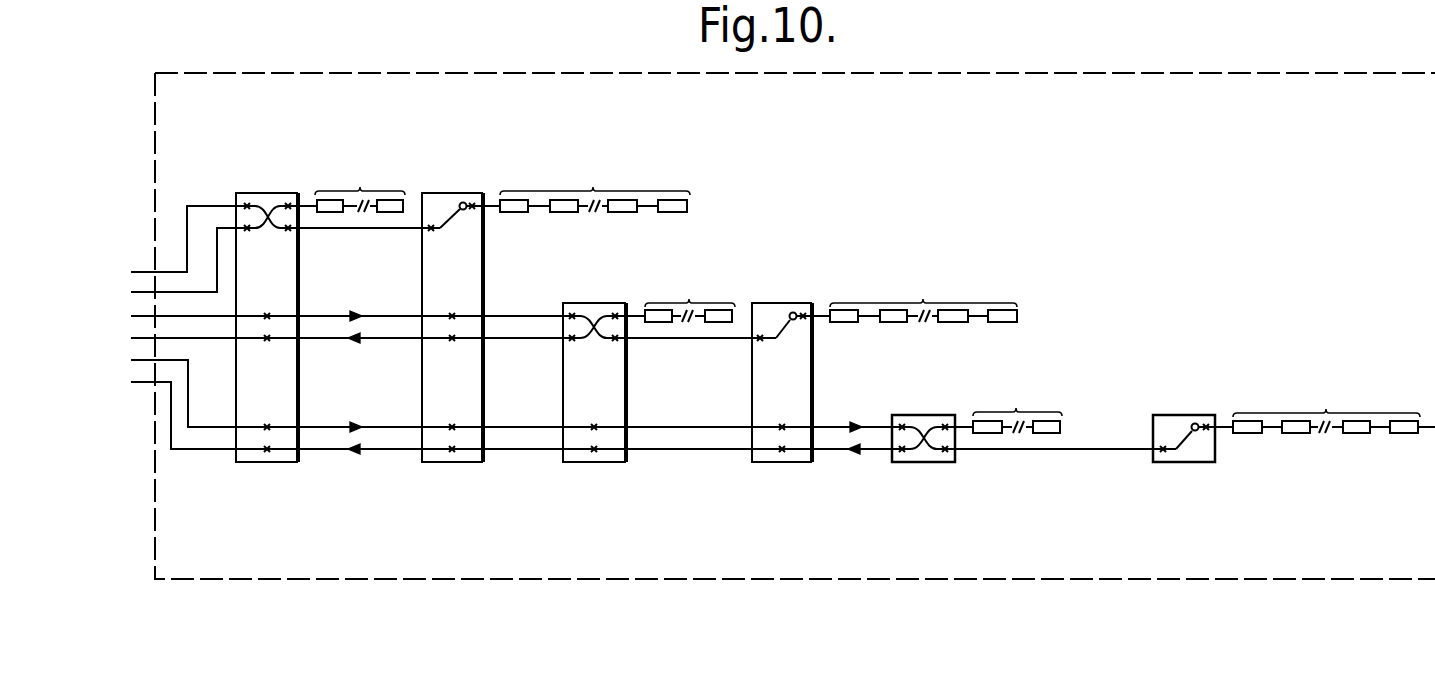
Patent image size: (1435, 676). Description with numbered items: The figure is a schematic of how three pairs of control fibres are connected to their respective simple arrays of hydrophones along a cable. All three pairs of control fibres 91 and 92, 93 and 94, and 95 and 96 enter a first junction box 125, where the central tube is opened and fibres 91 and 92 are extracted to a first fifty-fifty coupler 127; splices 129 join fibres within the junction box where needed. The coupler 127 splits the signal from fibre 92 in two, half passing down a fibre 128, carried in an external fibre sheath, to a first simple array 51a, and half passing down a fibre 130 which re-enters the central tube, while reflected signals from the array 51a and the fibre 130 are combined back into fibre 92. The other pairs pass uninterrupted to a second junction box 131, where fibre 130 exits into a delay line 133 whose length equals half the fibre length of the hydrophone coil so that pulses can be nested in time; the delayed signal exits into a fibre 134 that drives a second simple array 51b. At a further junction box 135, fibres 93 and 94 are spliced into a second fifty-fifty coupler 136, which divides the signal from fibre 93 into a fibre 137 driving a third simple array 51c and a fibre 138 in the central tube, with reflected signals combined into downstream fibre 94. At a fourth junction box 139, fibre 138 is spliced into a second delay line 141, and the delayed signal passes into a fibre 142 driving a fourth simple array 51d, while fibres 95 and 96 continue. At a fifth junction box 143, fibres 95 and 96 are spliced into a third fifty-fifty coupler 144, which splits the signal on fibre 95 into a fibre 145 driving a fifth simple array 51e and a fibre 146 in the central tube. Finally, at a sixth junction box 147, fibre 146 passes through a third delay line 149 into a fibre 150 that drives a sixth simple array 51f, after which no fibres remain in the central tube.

The control fibre 91 is at (131, 272).
The control fibre 92 is at (131, 292).
The control fibre 93 is at (131, 316).
The control fibre 94 is at (131, 338).
The control fibre 95 is at (131, 360).
The control fibre 96 is at (131, 382).
The first junction box 125 is at (278, 464).
The first 50:50 coupler 127 is at (268, 215).
The fibre 128 is at (304, 203).
The splices 129 is at (247, 226).
The fibre 130 is at (350, 230).
The second junction box 131 is at (468, 464).
The delay line 133 is at (462, 202).
The fibre 134 is at (490, 210).
The further junction box 135 is at (610, 464).
The second 50:50 coupler 136 is at (592, 318).
The fibre 137 is at (634, 312).
The fibre 138 is at (640, 340).
The fourth junction box 139 is at (798, 464).
The second delay line 141 is at (792, 312).
The fibre 142 is at (822, 318).
The fifth junction box 143 is at (942, 464).
The third 50:50 coupler 144 is at (925, 430).
The fibre 145 is at (963, 424).
The fibre 146 is at (1000, 451).
The sixth junction box 147 is at (1200, 464).
The third delay line 149 is at (1192, 424).
The fibre 150 is at (1225, 429).
The first simple array 51a is at (360, 186).
The second simple array 51b is at (595, 186).
The third simple array 51c is at (690, 297).
The fourth simple array 51d is at (923, 297).
The fifth simple array 51e is at (1017, 407).
The sixth simple array 51f is at (1334, 407).